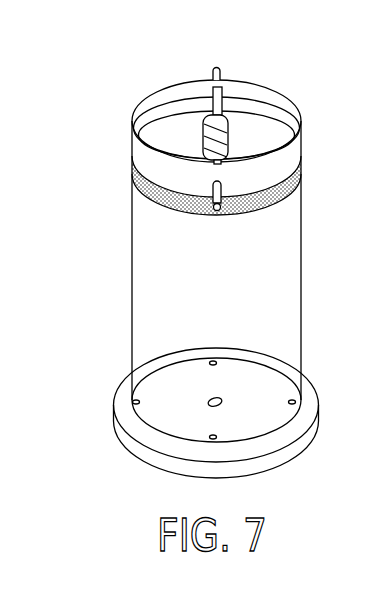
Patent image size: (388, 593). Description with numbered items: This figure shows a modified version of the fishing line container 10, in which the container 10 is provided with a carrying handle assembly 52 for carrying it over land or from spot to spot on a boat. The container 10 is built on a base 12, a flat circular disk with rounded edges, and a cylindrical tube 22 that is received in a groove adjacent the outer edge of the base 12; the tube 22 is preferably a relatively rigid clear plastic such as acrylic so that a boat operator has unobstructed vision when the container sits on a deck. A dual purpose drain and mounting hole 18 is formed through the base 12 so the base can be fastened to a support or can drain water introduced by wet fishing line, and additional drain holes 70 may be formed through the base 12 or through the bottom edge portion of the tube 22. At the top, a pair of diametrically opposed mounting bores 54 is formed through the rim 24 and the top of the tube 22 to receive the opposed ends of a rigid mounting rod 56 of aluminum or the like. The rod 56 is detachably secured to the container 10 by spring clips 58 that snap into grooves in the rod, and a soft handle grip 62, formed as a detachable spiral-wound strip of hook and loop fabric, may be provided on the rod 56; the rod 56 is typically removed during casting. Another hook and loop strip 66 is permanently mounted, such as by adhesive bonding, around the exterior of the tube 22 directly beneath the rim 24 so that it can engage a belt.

The container 10 is at (62, 278).
The base 12 is at (287, 430).
The drain and mounting hole 18 is at (208, 402).
The cylindrical tube 22 is at (288, 297).
The rim 24 is at (295, 150).
The carrying handle assembly 52 is at (256, 125).
The mounting bores 54 is at (190, 134).
The mounting rod 56 is at (212, 162).
The spring clips 58 is at (226, 79).
The handle grip 62 is at (208, 118).
The Velcro strip 66 is at (288, 193).
The drain holes 70 is at (214, 340).